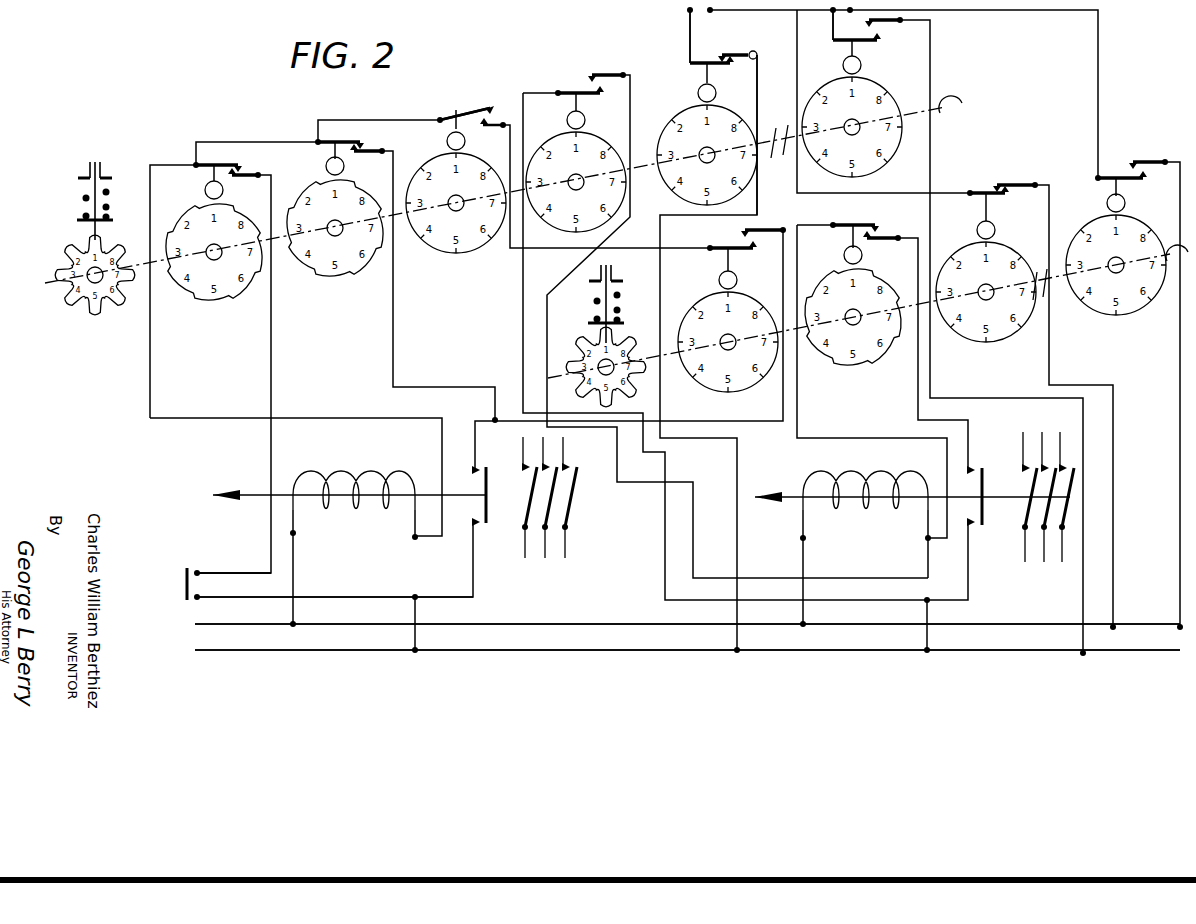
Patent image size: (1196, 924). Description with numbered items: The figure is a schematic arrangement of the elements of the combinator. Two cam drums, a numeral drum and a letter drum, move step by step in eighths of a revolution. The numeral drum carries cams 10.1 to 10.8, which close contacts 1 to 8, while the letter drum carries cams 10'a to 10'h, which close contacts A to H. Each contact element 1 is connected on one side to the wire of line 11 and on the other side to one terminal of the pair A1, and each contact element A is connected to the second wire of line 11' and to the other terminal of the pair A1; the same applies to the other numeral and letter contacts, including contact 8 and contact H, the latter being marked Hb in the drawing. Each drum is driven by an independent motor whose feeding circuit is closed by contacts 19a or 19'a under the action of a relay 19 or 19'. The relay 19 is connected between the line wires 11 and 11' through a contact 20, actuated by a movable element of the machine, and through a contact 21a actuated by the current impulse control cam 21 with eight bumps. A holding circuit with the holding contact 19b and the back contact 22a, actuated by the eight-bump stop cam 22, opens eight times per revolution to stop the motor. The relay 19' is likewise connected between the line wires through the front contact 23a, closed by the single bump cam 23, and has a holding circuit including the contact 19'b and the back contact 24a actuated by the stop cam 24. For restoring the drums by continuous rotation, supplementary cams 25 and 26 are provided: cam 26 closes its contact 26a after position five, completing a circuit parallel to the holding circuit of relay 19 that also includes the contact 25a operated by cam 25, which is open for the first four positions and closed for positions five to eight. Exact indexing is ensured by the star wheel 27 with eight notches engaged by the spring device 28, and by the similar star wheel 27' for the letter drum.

The spring device 28 is at (90, 192).
The star wheel 27 is at (90, 286).
The current impulse control cam 21 is at (196, 292).
The contact 21a is at (208, 162).
The stop cam 22 is at (318, 270).
The back contact 22a is at (332, 140).
The supplementary cam 25 is at (443, 245).
The contact 25a is at (466, 115).
The single bump cam 23 is at (562, 212).
The front contact 23a is at (565, 92).
The pair of terminals A1 is at (705, 36).
The contact element 1 is at (719, 54).
The cam 10.1 is at (745, 108).
The relay Hb lead Hb is at (847, 25).
The contact element 8 is at (866, 34).
The cam 10.8 is at (898, 100).
The contact element A is at (1002, 182).
The contact element H is at (1131, 160).
The contact 26a is at (722, 240).
The supplementary cam 26 is at (708, 382).
The back contact 24a is at (850, 226).
The stop cam 24 is at (838, 366).
The cam 10'a is at (986, 301).
The cam 10'h is at (1116, 273).
The star wheel 27' is at (598, 341).
The relay 19 is at (354, 478).
The contacts 19a is at (570, 507).
The holding contact 19b is at (489, 518).
The relay 19' is at (865, 478).
The contacts 19'a is at (1090, 497).
The contact 19'b is at (993, 521).
The contact 20 is at (182, 578).
The line wire 11' is at (687, 615).
The line wire 11 is at (687, 642).